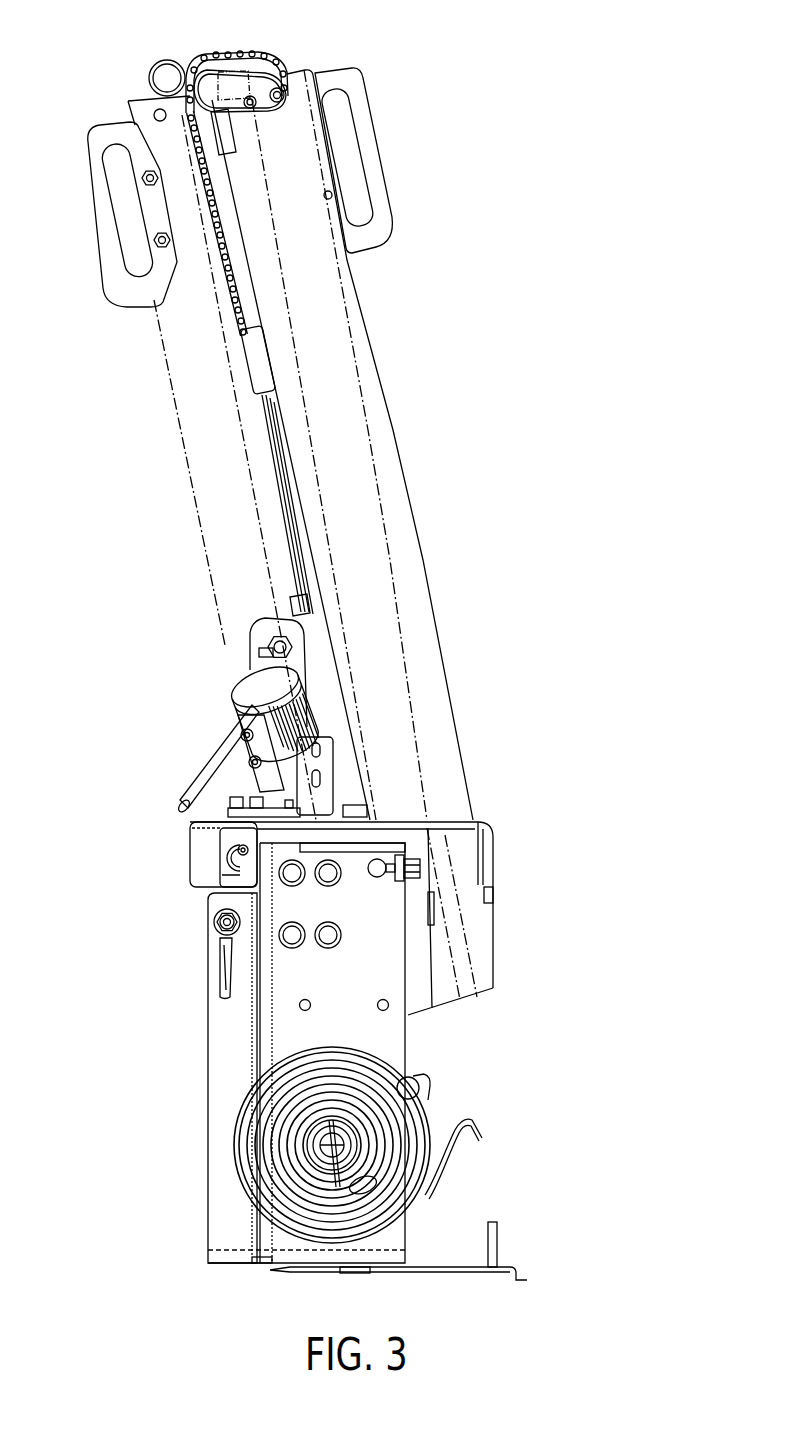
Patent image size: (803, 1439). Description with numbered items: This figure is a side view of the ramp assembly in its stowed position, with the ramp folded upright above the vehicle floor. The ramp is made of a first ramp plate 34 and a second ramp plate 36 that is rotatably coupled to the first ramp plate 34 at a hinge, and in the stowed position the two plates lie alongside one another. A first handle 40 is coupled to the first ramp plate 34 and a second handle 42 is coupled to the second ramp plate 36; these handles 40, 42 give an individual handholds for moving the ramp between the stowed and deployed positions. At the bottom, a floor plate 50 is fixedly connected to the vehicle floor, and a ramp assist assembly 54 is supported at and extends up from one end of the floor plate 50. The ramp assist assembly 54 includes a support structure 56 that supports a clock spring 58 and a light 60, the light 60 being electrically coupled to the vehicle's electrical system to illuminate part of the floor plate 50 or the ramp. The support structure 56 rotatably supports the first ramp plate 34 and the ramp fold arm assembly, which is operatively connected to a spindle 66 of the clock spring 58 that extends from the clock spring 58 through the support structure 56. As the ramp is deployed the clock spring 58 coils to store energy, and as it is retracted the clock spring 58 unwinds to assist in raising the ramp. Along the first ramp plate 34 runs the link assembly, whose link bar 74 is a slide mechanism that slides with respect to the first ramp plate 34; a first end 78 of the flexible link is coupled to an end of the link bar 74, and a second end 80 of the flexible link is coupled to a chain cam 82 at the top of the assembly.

The first ramp plate 34 is at (160, 365).
The second ramp plate 36 is at (372, 540).
The first handle 40 is at (97, 173).
The second handle 42 is at (382, 185).
The floor plate 50 is at (453, 1268).
The ramp assist assembly 54 is at (135, 897).
The support structure 56 is at (425, 1034).
The clock spring 58 is at (280, 1203).
The light 60 is at (240, 681).
The spindle 66 is at (325, 1143).
The link bar 74 is at (267, 510).
The first end 78 is at (237, 342).
The second end 80 is at (276, 70).
The chain cam 82 is at (210, 77).